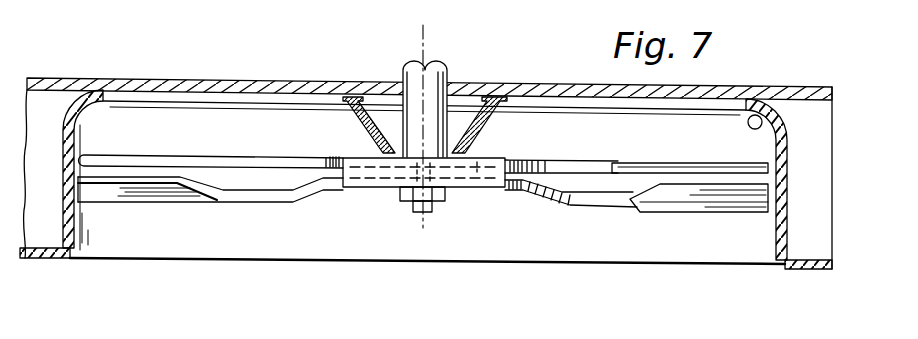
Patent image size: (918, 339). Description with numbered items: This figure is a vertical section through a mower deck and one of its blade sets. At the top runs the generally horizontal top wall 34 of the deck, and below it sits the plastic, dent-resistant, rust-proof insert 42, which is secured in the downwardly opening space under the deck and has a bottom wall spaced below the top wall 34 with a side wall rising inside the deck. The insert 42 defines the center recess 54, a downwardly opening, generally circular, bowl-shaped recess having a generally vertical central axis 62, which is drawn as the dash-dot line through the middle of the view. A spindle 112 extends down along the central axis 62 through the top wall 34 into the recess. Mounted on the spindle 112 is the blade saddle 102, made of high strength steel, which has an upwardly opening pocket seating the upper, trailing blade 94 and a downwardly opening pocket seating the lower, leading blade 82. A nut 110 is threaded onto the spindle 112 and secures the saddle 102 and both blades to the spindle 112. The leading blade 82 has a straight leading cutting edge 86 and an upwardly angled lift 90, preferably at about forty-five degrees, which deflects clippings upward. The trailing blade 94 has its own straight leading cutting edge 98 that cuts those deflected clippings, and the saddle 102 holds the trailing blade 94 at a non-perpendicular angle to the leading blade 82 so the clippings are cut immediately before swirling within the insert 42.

The top wall 34 is at (78, 78).
The insert 42 is at (782, 217).
The center recess 54 is at (779, 122).
The central axis 62 is at (427, 39).
The leading blade 82 is at (580, 205).
The leading cutting edge 86 is at (696, 207).
The lift 90 is at (113, 193).
The trailing blade 94 is at (260, 156).
The leading cutting edge 98 is at (677, 160).
The blade saddle 102 is at (365, 190).
The nut 110 is at (450, 193).
The spindle 112 is at (402, 73).